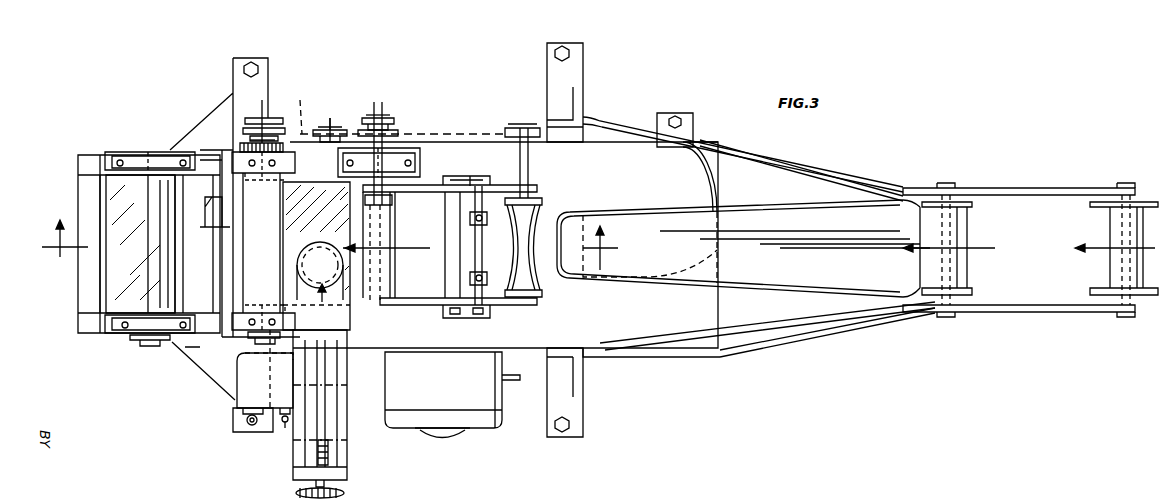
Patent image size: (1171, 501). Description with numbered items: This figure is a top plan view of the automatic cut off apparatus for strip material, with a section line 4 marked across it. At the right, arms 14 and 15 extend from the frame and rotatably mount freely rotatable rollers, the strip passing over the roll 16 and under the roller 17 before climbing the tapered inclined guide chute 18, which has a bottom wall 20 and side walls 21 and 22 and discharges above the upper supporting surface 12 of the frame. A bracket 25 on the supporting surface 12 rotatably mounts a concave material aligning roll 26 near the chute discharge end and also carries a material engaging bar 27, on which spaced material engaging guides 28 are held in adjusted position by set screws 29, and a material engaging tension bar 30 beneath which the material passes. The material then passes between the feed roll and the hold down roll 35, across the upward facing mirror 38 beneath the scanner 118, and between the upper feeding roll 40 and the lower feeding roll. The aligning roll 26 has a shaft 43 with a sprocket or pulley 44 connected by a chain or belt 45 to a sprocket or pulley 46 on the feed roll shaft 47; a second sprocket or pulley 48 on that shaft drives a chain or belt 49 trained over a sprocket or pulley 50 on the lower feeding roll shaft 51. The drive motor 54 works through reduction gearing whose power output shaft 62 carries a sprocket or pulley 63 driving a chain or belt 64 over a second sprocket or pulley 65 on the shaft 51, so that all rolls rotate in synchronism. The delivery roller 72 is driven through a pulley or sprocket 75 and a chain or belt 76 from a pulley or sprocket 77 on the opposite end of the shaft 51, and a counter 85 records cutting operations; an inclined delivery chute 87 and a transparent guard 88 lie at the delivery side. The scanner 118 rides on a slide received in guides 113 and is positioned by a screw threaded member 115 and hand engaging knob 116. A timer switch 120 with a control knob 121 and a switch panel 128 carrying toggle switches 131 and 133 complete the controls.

The section line 4- 4 is at (330, 245).
The upper supporting surface 12 is at (528, 332).
The arm 14 is at (792, 332).
The arm 15 is at (698, 333).
The roll 16 is at (1092, 290).
The roller 17 is at (970, 290).
The guide chute 18 is at (748, 200).
The bottom wall 20 is at (870, 247).
The side wall 21 is at (762, 288).
The side wall 22 is at (788, 212).
The bracket 25 is at (500, 310).
The material aligning roll 26 is at (536, 288).
The material engaging bar 27 is at (476, 185).
The material engaging guides 28 is at (482, 210).
The set screws 29 is at (487, 222).
The material engaging tension bar 30 is at (458, 243).
The hold down roll 35 is at (390, 275).
The mirror 38 is at (326, 196).
The upper feeding roll 40 is at (268, 280).
The shaft 43 is at (528, 165).
The sprocket or pulley 44 is at (524, 124).
The chain or belt 45 is at (482, 134).
The sprocket or pulley 46 is at (392, 133).
The shaft 47 is at (418, 158).
The second sprocket or pulley 48 is at (330, 125).
The chain or belt 49 is at (378, 118).
The sprocket or pulley 50 is at (283, 120).
The shaft 51 is at (248, 134).
The drive motor 54 is at (632, 185).
The power output shaft 62 is at (327, 142).
The sprocket or pulley 63 is at (340, 130).
The chain or belt 64 is at (311, 110).
The second sprocket or pulley 65 is at (263, 118).
The delivery roller 72 is at (165, 270).
The pulley or sprocket 75 is at (145, 346).
The chain or belt 76 is at (185, 348).
The pulley or sprocket 77 is at (262, 345).
The counter 85 is at (210, 210).
The delivery chute 87 is at (85, 282).
The transparent guard 88 is at (105, 300).
The guides 113 is at (340, 440).
The screw threaded member 115 is at (330, 462).
The hand engaging knob 116 is at (339, 490).
The scanner 118 is at (363, 283).
The timer switch 120 is at (450, 390).
The control knob 121 is at (445, 436).
The switch panel 128 is at (237, 409).
The toggle switch 131 is at (252, 427).
The toggle switch 133 is at (284, 428).